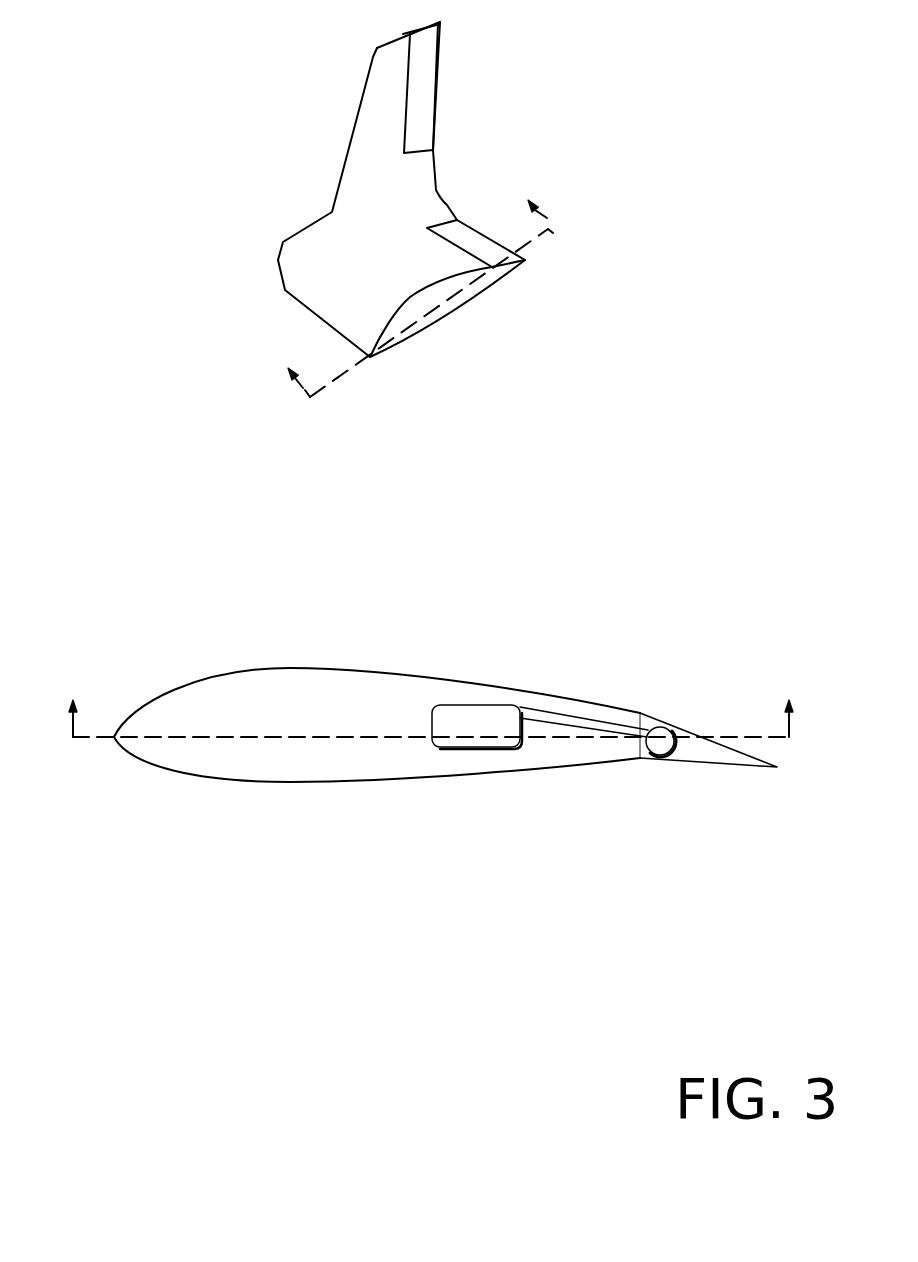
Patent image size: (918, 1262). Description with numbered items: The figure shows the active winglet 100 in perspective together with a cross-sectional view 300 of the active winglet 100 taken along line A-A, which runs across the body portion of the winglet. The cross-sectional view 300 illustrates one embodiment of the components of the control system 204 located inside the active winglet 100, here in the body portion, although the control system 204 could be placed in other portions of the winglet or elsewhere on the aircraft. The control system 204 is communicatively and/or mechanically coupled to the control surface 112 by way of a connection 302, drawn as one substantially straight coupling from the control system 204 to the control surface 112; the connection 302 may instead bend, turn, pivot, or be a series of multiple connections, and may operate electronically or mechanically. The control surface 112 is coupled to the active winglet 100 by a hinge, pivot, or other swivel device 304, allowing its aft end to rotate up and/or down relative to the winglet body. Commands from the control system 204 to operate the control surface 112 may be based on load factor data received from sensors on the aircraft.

The active winglet 100 is at (459, 80).
The cross-sectional view 300 is at (320, 645).
The connection 302 is at (577, 718).
The hinge, pivot, or other swivel device 304 is at (660, 741).
The control surface 112 is at (688, 753).
The control system 204 is at (477, 727).